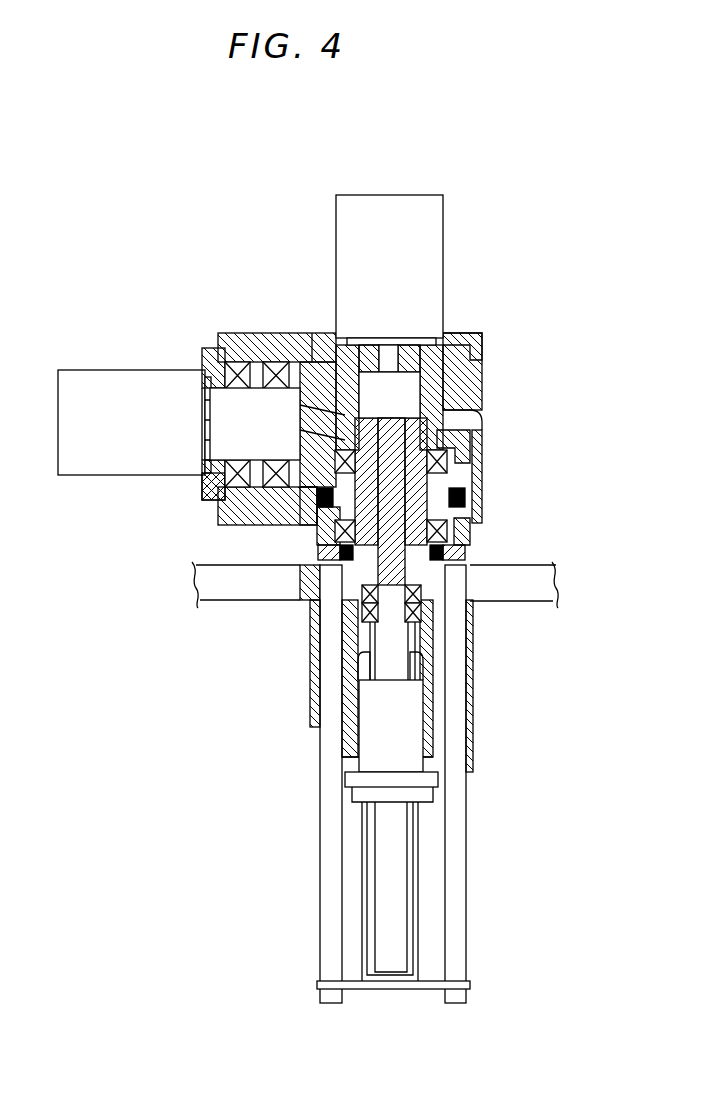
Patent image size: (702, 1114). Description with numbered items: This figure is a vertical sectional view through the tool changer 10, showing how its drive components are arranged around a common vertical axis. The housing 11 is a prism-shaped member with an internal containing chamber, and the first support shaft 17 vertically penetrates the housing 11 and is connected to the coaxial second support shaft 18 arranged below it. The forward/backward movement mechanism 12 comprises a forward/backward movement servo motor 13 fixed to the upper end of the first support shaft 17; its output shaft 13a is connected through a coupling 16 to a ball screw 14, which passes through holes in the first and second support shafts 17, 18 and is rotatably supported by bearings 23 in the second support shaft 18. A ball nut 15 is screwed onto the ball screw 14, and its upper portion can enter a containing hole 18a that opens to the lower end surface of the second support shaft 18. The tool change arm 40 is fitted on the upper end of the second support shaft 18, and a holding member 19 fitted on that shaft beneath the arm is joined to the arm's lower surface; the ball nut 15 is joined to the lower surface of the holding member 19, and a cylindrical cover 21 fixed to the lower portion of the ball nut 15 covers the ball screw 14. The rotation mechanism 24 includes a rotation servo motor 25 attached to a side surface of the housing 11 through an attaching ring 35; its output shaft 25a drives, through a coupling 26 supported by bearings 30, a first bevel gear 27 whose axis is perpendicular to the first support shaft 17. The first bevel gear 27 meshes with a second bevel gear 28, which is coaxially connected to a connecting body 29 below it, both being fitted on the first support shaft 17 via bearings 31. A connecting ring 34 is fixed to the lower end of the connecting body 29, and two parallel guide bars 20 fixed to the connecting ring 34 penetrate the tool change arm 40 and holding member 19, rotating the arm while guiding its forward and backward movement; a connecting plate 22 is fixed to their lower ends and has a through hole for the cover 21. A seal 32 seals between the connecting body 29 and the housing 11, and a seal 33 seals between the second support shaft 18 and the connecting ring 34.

The tool changer 10 is at (308, 602).
The housing 11 is at (482, 352).
The forward/backward movement mechanism 12 is at (296, 248).
The forward/backward movement servo motor 13 is at (346, 216).
The output shaft 13a is at (386, 360).
The ball screw 14 is at (404, 880).
The ball nut 15 is at (366, 762).
The coupling 16 is at (413, 395).
The first support shaft 17 is at (456, 340).
The second support shaft 18 is at (430, 665).
The containing hole 18a is at (423, 683).
The holding member 19 is at (469, 756).
The guide bars 20 is at (326, 900).
The cover 21 is at (366, 955).
The connecting plate 22 is at (354, 989).
The bearings 23 is at (422, 612).
The rotation mechanism 24 is at (175, 328).
The rotation servo motor 25 is at (96, 378).
The output shaft 25a is at (207, 421).
The coupling 26 is at (222, 397).
The first bevel gear 27 is at (290, 372).
The second bevel gear 28 is at (460, 453).
The connecting body 29 is at (468, 527).
The bearings 30 is at (288, 365).
The bearings 31 is at (462, 484).
The seal 32 is at (318, 499).
The seal 33 is at (452, 552).
The connecting ring 34 is at (306, 580).
The attaching ring 35 is at (206, 490).
The tool change arm 40 is at (196, 590).